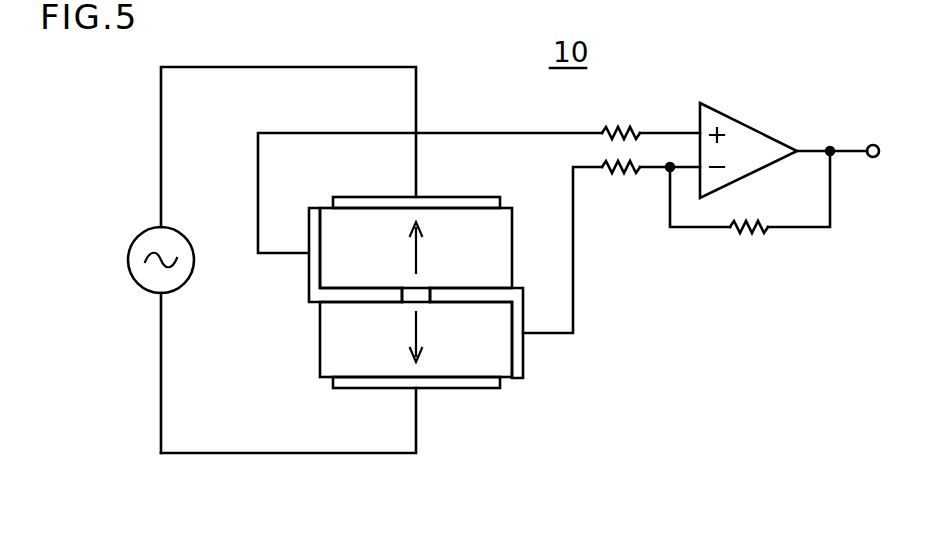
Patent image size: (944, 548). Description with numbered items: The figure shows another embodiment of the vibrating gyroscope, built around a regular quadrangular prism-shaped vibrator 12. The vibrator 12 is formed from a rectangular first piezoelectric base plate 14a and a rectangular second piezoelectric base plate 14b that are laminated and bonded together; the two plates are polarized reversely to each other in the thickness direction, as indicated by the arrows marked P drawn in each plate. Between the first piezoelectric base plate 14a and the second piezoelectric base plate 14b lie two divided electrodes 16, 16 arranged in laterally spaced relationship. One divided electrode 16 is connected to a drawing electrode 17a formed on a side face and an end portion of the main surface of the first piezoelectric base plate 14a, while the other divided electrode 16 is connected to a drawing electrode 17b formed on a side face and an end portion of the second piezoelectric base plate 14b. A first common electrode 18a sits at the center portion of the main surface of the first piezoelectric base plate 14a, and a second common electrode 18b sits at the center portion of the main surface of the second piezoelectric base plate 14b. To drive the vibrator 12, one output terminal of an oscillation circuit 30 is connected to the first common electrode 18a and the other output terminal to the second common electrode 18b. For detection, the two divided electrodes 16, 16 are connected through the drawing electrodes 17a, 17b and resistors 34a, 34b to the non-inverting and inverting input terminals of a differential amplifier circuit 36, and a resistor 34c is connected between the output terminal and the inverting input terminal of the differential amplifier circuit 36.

The vibrator 12 is at (423, 315).
The first piezoelectric base plate 14a is at (503, 227).
The second piezoelectric base plate 14b is at (335, 357).
The divided electrode 16 is at (352, 294).
The drawing electrode 17a is at (312, 265).
The drawing electrode 17b is at (518, 358).
The first common electrode 18a is at (472, 203).
The second common electrode 18b is at (440, 402).
The oscillation circuit 30 is at (153, 273).
The resistor 34a is at (620, 129).
The resistor 34b is at (622, 175).
The resistor 34c is at (745, 236).
The differential amplifier circuit 36 is at (755, 127).